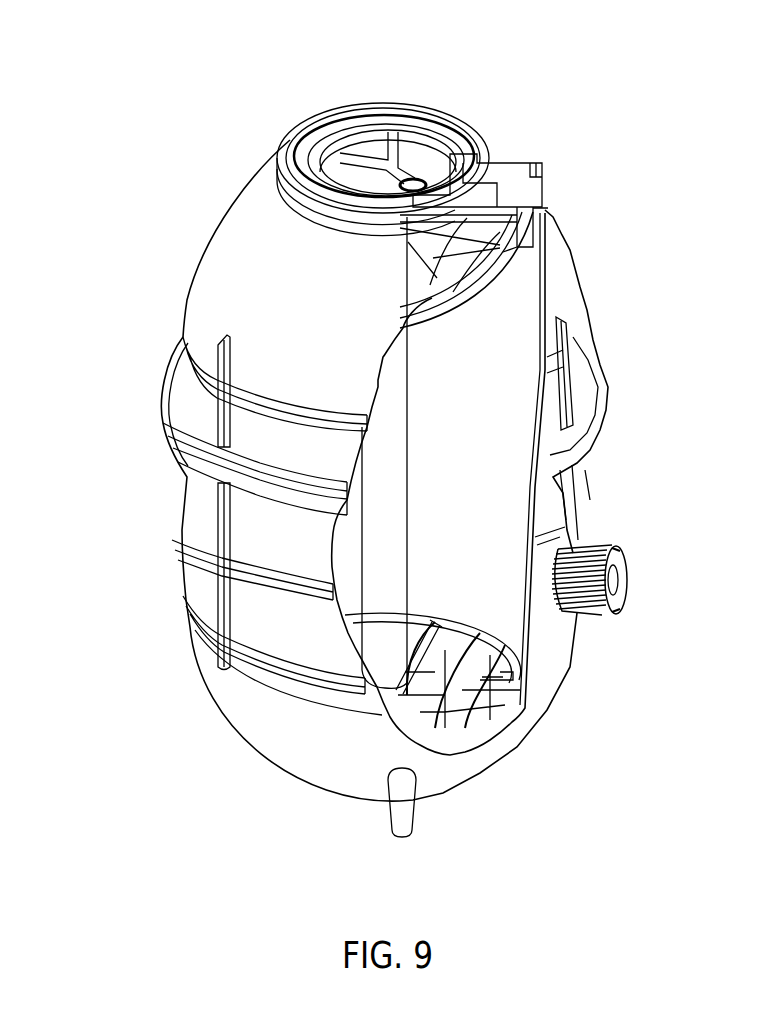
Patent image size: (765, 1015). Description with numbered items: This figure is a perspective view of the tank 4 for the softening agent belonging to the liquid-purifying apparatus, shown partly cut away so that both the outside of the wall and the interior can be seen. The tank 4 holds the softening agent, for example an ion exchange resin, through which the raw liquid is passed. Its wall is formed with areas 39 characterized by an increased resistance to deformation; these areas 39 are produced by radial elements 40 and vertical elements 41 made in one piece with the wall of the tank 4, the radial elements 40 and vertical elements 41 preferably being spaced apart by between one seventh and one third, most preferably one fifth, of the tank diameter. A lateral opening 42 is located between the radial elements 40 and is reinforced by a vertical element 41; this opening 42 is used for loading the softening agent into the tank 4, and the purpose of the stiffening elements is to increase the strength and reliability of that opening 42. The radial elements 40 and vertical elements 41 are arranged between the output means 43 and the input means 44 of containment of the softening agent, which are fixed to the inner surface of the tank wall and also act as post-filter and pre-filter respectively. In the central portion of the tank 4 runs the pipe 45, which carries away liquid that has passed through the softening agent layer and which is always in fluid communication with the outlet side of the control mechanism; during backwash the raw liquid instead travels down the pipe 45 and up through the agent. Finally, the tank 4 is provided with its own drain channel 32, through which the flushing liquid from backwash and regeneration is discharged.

The tank for the softening agent 4 is at (262, 275).
The drain channel 32 is at (482, 193).
The areas of increased resistance to deformation 39 is at (222, 635).
The radial elements 40 is at (270, 662).
The vertical elements 41 is at (570, 395).
The lateral opening 42 is at (613, 587).
The output means of containment of the softening agent 43 is at (508, 283).
The input means of containment of the softening agent 44 is at (462, 710).
The pipe 45 is at (387, 430).